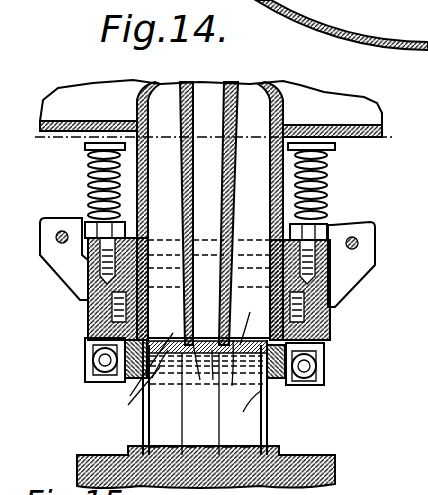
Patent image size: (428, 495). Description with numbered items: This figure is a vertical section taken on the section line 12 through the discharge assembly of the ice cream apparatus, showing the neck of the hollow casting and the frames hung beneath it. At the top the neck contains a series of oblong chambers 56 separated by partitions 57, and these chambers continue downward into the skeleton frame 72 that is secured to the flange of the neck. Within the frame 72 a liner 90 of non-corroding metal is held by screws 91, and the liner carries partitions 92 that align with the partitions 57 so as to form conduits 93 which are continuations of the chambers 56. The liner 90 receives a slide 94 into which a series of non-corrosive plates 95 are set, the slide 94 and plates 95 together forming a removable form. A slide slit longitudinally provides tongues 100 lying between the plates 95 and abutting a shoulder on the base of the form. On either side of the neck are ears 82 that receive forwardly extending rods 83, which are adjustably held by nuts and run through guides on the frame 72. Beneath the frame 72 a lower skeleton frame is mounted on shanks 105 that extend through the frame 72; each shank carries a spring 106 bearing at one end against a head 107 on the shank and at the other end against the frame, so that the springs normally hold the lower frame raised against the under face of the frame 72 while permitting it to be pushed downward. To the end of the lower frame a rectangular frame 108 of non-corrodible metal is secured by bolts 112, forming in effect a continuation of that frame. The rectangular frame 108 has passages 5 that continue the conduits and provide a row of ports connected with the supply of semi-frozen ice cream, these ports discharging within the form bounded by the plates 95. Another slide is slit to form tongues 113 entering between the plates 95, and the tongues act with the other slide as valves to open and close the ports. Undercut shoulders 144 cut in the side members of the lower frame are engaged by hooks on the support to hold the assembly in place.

The section line 12 is at (55, 143).
The oblong chambers 56 is at (201, 213).
The partitions 57 is at (243, 213).
The skeleton frame 72 is at (90, 273).
The ears 82 is at (72, 221).
The rods 83 is at (60, 234).
The liner 90 is at (327, 226).
The screws 91 is at (318, 339).
The partitions 92 is at (209, 289).
The conduits 93 is at (179, 211).
The slide 94 is at (328, 347).
The plates 95 is at (265, 410).
The tongues 100 is at (184, 359).
The shanks 105 is at (325, 180).
The spring 106 is at (333, 188).
The head 107 is at (325, 147).
The rectangular frame 108 is at (229, 387).
The bolts 112 is at (318, 362).
The tongues 113 is at (134, 372).
The undercut shoulders 144 is at (92, 352).
The passages 5 is at (234, 398).